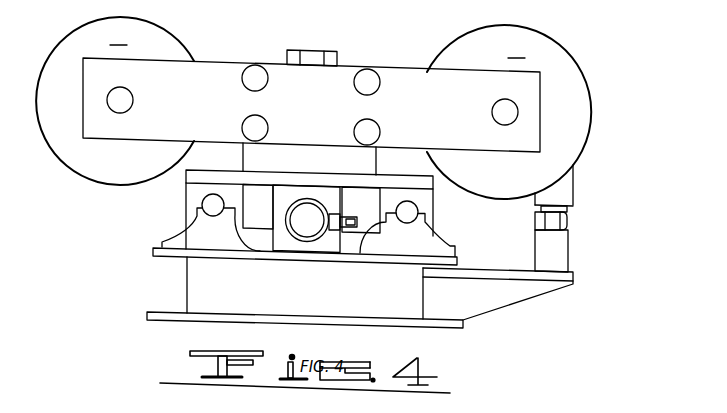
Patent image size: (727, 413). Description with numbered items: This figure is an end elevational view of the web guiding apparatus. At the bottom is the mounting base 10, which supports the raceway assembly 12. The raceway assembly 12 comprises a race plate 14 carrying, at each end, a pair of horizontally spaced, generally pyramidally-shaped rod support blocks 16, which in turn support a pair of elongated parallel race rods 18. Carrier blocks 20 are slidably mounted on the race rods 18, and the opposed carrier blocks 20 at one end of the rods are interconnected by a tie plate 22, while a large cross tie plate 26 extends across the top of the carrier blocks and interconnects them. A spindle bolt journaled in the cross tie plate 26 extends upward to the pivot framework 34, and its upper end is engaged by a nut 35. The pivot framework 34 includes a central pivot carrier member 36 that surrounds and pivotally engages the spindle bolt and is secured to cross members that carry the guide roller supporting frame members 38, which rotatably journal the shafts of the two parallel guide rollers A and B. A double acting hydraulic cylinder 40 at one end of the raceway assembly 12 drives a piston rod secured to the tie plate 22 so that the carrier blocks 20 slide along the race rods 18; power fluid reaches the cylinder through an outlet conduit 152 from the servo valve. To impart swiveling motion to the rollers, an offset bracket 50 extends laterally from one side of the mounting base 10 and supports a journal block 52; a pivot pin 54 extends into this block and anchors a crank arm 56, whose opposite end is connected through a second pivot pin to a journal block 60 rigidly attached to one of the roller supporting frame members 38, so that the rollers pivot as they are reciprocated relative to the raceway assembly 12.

The mounting base 10 is at (197, 281).
The raceway assembly 12 is at (457, 247).
The race plate 14 is at (155, 254).
The rod support blocks 16 is at (197, 233).
The race rods 18 is at (204, 204).
The carrier blocks 20 is at (426, 197).
The tie plate 22 is at (247, 214).
The cross tie plate 26 is at (386, 184).
The pivot framework 34 is at (216, 60).
The nut 35 is at (312, 53).
The central pivot carrier member 36 is at (316, 166).
The guide roller supporting frame members 38 is at (221, 107).
The double acting hydraulic cylinder 40 is at (296, 202).
The offset bracket 50 is at (493, 300).
The journal block 52 is at (555, 250).
The pivot pin 54 is at (555, 208).
The crank arm 56 is at (569, 218).
The journal block 60 is at (568, 182).
The power fluid outlet conduit 152 is at (347, 216).